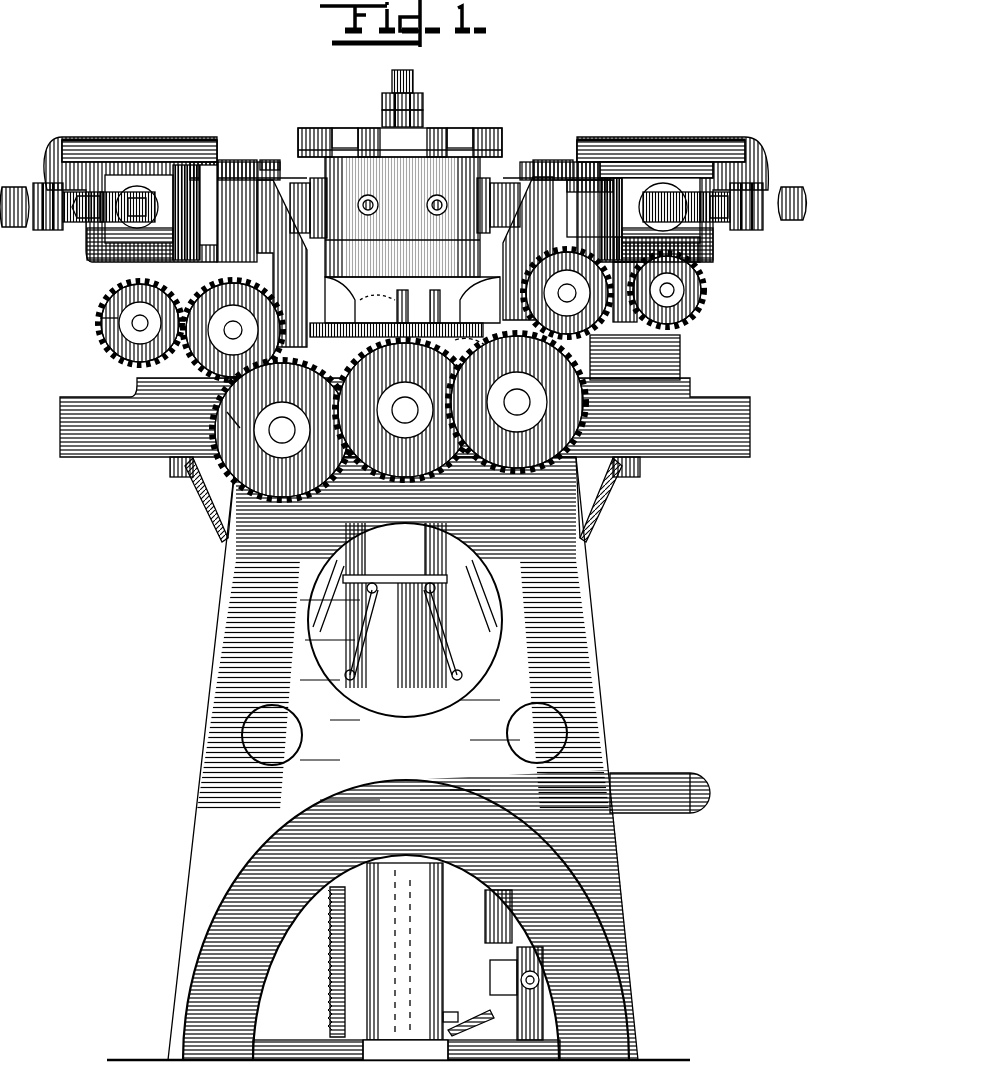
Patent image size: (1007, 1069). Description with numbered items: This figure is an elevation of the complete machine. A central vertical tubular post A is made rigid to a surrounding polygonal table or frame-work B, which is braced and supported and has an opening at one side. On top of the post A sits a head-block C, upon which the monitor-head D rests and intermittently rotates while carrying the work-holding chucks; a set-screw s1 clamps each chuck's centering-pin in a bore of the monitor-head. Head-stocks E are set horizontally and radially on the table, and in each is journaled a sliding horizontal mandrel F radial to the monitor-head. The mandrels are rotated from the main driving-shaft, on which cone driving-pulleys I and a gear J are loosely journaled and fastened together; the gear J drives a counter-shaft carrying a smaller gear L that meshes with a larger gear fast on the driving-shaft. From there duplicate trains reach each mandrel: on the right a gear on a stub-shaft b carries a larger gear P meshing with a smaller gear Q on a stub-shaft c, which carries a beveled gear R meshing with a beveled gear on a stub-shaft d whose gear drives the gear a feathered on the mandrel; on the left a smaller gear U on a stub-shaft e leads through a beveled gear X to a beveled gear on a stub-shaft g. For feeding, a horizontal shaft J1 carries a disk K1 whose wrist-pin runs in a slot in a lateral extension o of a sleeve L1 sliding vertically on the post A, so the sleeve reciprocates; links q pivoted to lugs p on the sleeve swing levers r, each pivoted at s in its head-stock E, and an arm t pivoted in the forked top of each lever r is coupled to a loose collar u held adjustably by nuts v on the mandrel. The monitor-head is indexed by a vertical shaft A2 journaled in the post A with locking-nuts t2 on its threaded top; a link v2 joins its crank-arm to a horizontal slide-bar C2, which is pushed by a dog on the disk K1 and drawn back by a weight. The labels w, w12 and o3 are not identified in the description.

The central vertical tubular post A is at (405, 951).
The vertical shaft A2 is at (414, 90).
The polygonal table or frame-work B is at (405, 697).
The head-block C is at (405, 307).
The horizontal slide-bar C2 is at (515, 955).
The monitor-head D is at (402, 217).
The head-stock E is at (406, 187).
The mandrel F is at (240, 203).
The cone driving-pulleys I is at (100, 312).
The gear J is at (227, 421).
The horizontal shaft J1 is at (652, 780).
The disk K1 is at (485, 905).
The smaller gear L is at (233, 330).
The sleeve L1 is at (395, 612).
The larger gear P is at (476, 348).
The smaller gear Q is at (575, 250).
The beveled gear R is at (503, 290).
The beveled gear X is at (289, 263).
The smaller gear U is at (235, 470).
The feathered gear a is at (405, 410).
The stub-shaft b is at (517, 402).
The stub-shaft c is at (567, 293).
The stub-shaft d is at (690, 290).
The stub-shaft e is at (282, 430).
The stub-shaft g is at (132, 325).
The lateral extension o is at (560, 450).
The pins o3 is at (377, 304).
The lugs p is at (424, 589).
The links q is at (452, 672).
The levers r is at (585, 527).
The pivot s is at (700, 262).
The set-screw s1 is at (462, 132).
The arm t is at (95, 142).
The locking-nuts t2 is at (424, 118).
The loose collar u is at (742, 230).
The nuts v is at (18, 226).
The pivoted link v2 is at (475, 1018).
The nut w is at (56, 230).
The cap ends w12 is at (410, 126).